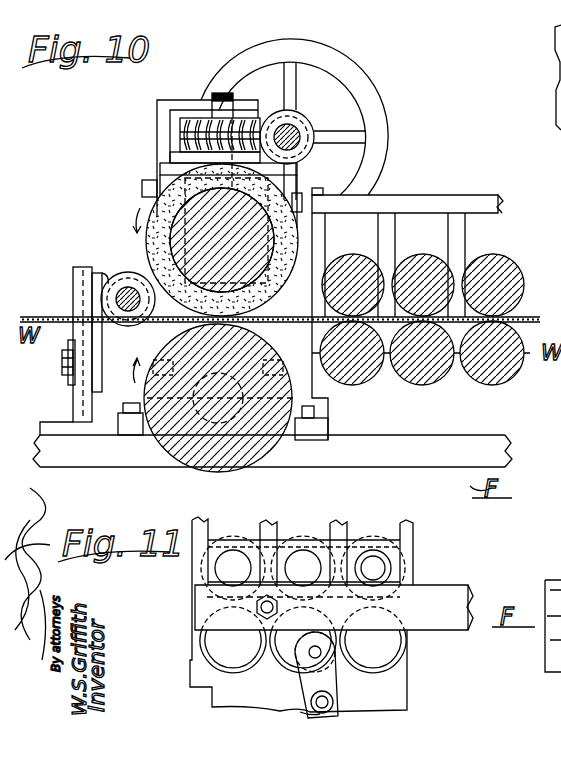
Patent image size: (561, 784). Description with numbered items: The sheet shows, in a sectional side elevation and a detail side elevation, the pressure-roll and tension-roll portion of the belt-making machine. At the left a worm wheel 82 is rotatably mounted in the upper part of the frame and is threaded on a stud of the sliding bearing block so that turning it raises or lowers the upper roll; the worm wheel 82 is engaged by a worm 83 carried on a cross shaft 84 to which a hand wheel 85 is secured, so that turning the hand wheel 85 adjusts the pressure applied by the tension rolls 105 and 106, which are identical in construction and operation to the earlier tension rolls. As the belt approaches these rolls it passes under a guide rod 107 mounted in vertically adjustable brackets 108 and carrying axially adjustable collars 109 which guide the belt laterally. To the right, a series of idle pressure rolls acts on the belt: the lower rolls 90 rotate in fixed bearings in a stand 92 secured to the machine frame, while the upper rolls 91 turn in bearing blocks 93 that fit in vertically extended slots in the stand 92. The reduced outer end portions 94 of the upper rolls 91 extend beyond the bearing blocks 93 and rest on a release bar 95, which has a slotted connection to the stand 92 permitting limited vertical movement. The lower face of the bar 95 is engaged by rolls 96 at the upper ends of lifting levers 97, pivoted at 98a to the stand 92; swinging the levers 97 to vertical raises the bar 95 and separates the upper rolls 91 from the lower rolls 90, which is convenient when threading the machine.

In FIG. 10, the worm wheel 82 is at (197, 135).
In FIG. 10, the worm 83 is at (305, 122).
In FIG. 10, the cross shaft 84 is at (297, 148).
In FIG. 10, the hand wheel 85 is at (352, 75).
In FIG. 10, the lower rolls 90 is at (350, 388).
In FIG. 11, the lower rolls 90 is at (390, 652).
In FIG. 10, the upper rolls 91 is at (353, 260).
In FIG. 11, the upper rolls 91 is at (373, 556).
In FIG. 10, the stand 92 is at (492, 385).
In FIG. 11, the stand 92 is at (400, 688).
In FIG. 10, the bearing blocks 93 is at (403, 257).
In FIG. 11, the bearing blocks 93 is at (327, 540).
In FIG. 11, the reduced outer end portions 94 is at (376, 568).
In FIG. 11, the release bar 95 is at (450, 625).
In FIG. 11, the rolls 96 is at (296, 652).
In FIG. 11, the lifting levers 97 is at (335, 690).
In FIG. 11, the pivot 98a is at (289, 718).
In FIG. 10, the tension roll 105 is at (150, 250).
In FIG. 10, the tension roll 106 is at (192, 447).
In FIG. 10, the guide rod 107 is at (130, 312).
In FIG. 10, the brackets 108 is at (97, 384).
In FIG. 10, the collars 109 is at (105, 295).